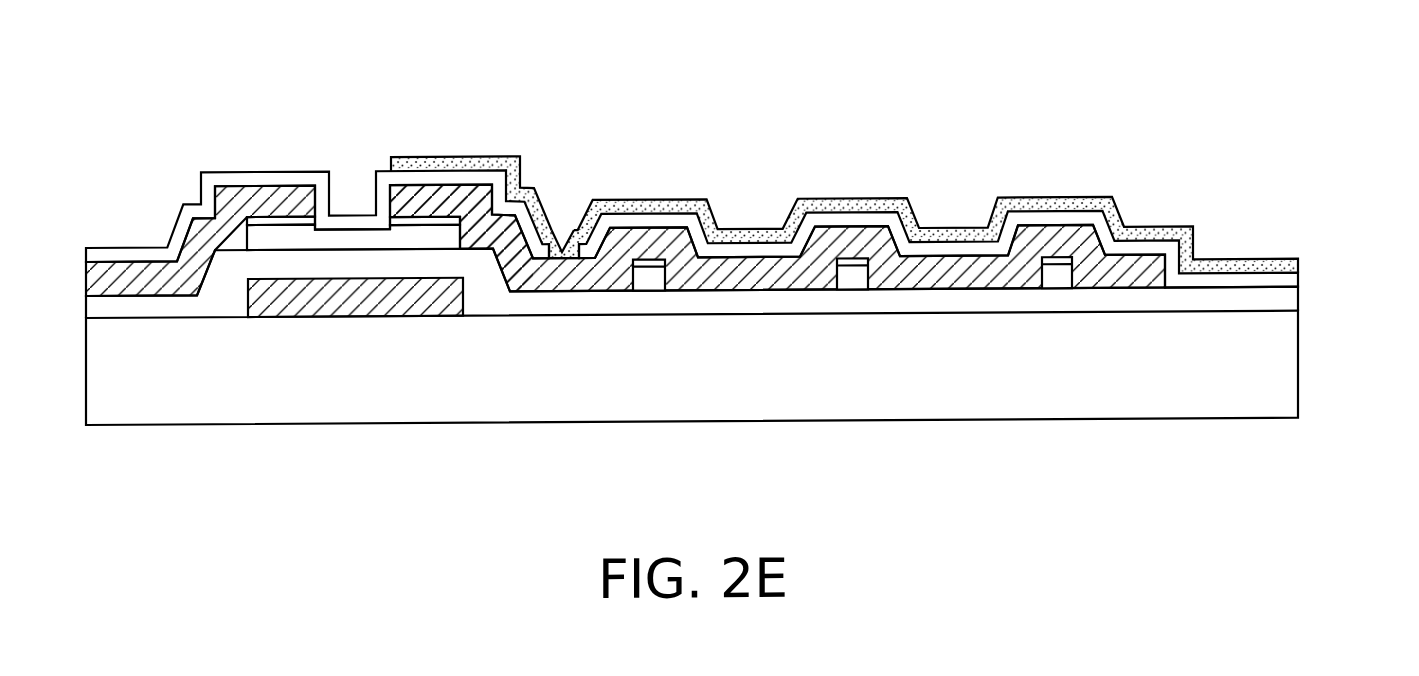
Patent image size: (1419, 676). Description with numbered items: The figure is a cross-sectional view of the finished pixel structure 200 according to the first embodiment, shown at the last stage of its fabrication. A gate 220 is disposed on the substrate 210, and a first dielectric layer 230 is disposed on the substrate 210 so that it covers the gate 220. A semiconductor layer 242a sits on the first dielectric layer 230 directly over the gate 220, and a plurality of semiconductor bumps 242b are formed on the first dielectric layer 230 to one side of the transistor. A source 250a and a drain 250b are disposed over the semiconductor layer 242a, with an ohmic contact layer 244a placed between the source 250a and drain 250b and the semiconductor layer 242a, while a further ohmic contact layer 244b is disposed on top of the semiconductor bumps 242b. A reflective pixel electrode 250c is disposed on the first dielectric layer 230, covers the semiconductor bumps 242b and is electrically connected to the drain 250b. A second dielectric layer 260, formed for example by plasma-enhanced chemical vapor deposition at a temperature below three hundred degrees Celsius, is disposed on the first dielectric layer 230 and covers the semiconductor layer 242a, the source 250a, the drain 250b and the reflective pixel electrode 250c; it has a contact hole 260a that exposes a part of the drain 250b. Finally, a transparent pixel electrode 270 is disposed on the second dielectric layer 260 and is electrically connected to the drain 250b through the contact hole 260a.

The pixel structure 200 is at (1342, 532).
The substrate 210 is at (1293, 385).
The gate 220 is at (333, 317).
The first dielectric layer 230 is at (1292, 309).
The semiconductor layer 242a is at (402, 242).
The ohmic contact layer 244a is at (284, 223).
The semiconductor bumps 242b is at (652, 287).
The ohmic contact layer 244b is at (855, 277).
The source 250a is at (249, 189).
The drain 250b is at (424, 190).
The reflective pixel electrode 250c is at (1111, 288).
The second dielectric layer 260 is at (1288, 286).
The contact hole 260a is at (561, 251).
The transparent pixel electrode 270 is at (1292, 274).